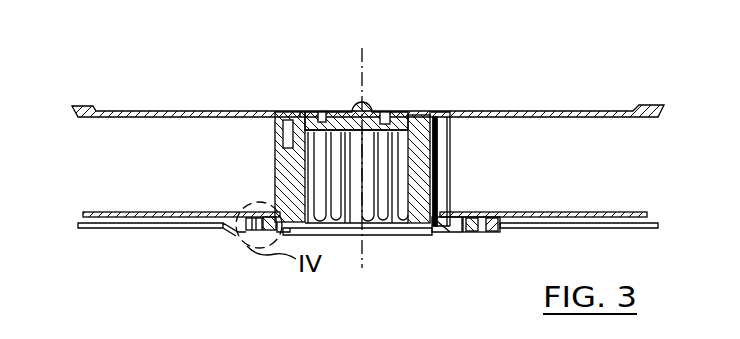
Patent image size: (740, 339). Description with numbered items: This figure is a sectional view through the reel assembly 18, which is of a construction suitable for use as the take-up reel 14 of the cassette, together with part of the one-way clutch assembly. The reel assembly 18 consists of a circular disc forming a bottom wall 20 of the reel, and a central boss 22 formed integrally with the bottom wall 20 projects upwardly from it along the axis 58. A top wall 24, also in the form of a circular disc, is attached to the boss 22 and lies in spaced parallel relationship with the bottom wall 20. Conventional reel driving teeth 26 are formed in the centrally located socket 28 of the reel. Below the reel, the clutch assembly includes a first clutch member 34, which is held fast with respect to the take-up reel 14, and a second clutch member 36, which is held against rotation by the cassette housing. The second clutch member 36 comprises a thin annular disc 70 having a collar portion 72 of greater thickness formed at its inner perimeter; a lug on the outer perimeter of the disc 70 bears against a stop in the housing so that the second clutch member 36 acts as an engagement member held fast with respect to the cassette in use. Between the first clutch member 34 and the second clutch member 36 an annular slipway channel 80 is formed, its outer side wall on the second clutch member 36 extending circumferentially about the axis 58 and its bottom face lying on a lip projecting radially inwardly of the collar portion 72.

The take-up reel 14 is at (233, 100).
The reel assembly 18 is at (166, 80).
The bottom wall 20 is at (113, 211).
The central boss 22 is at (288, 160).
The top wall 24 is at (131, 110).
The reel driving teeth 26 is at (409, 226).
The socket 28 is at (380, 222).
The first clutch member 34 is at (446, 233).
The second clutch member 36 is at (626, 229).
The axis 58 is at (366, 78).
The annular disc 70 is at (142, 229).
The collar portion 72 is at (492, 232).
The slipway channel 80 is at (488, 211).